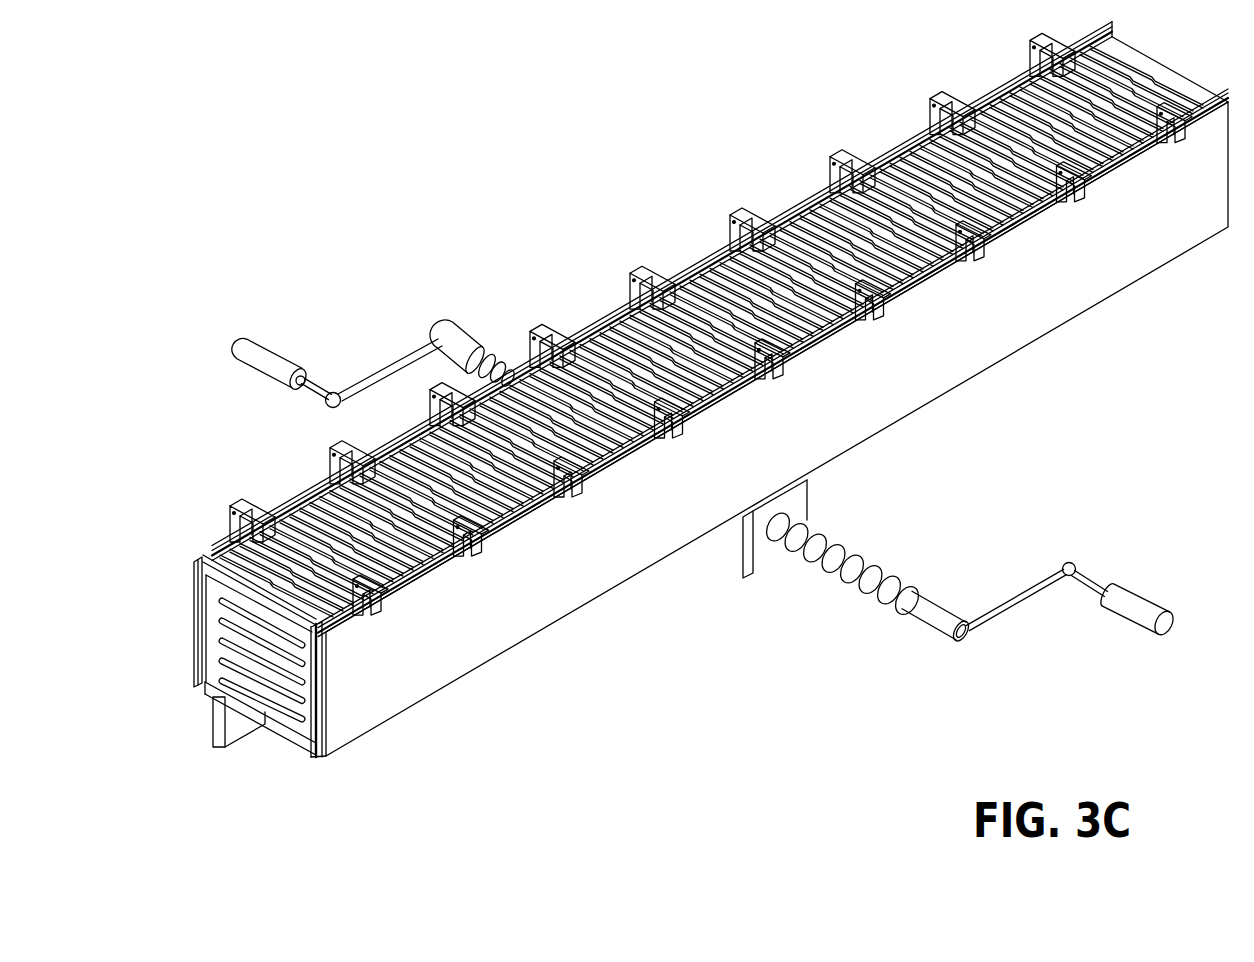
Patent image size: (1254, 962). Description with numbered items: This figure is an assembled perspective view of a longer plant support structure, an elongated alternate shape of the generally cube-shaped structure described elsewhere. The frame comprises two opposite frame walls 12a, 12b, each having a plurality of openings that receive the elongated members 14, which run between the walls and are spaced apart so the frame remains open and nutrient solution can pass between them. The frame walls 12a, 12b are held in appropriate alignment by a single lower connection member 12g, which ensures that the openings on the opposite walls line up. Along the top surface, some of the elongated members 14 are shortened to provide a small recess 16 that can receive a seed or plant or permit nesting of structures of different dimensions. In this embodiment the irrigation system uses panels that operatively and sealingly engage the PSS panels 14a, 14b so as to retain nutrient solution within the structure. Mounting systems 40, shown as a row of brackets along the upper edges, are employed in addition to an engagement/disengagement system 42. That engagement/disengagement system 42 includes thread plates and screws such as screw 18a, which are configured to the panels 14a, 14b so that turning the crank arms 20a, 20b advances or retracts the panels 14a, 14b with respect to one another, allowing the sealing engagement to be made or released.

The elongated members 14 is at (1117, 97).
The PSS panel 14a is at (325, 697).
The PSS panel 14b is at (910, 140).
The mounting systems 40 is at (747, 207).
The crank arm 20b is at (263, 360).
The crank arm 20a is at (1133, 600).
The screw 18a is at (840, 587).
The recess 16 is at (807, 497).
The frame wall 12a is at (198, 658).
The frame wall 12b is at (305, 748).
The lower connection member 12g is at (278, 730).
The engagement/disengagement system 42 is at (757, 707).